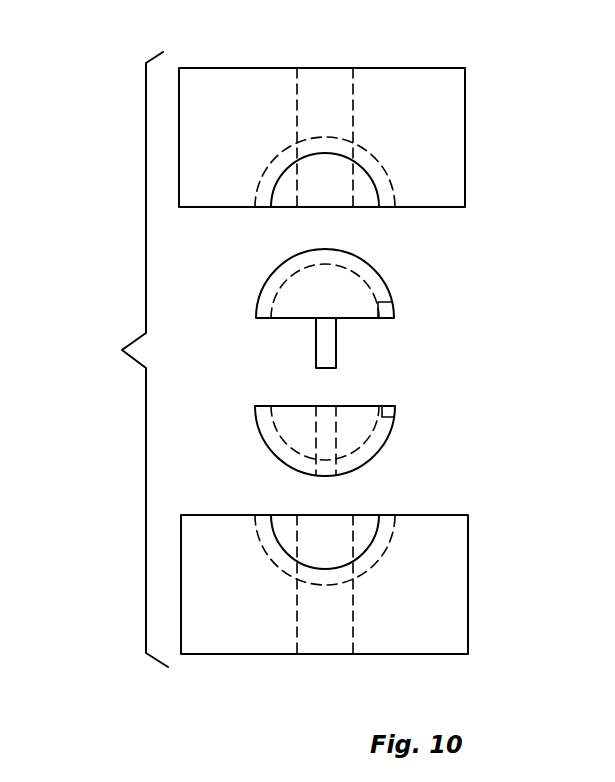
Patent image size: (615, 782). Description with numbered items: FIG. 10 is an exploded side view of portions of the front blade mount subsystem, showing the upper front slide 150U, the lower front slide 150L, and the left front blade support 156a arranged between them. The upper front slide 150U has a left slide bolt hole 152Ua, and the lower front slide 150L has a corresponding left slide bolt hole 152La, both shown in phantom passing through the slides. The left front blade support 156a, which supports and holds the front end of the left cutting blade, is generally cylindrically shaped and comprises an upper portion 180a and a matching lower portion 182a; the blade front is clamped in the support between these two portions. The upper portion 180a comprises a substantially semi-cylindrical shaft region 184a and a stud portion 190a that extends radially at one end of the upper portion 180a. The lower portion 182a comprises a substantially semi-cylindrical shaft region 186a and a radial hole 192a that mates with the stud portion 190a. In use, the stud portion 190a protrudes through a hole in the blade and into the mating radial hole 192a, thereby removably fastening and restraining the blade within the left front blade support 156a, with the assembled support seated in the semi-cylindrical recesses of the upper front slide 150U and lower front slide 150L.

The upper front slide 150U is at (360, 119).
The left slide bolt hole 152Ua is at (298, 92).
The lower front slide 150L is at (335, 607).
The left slide bolt hole 152La is at (298, 632).
The left front blade support 156a is at (388, 362).
The upper portion 180a is at (384, 273).
The shaft region 184a is at (395, 302).
The stud portion 190a is at (336, 350).
The lower portion 182a is at (354, 434).
The shaft region 186a is at (395, 421).
The radial hole 192a is at (318, 422).